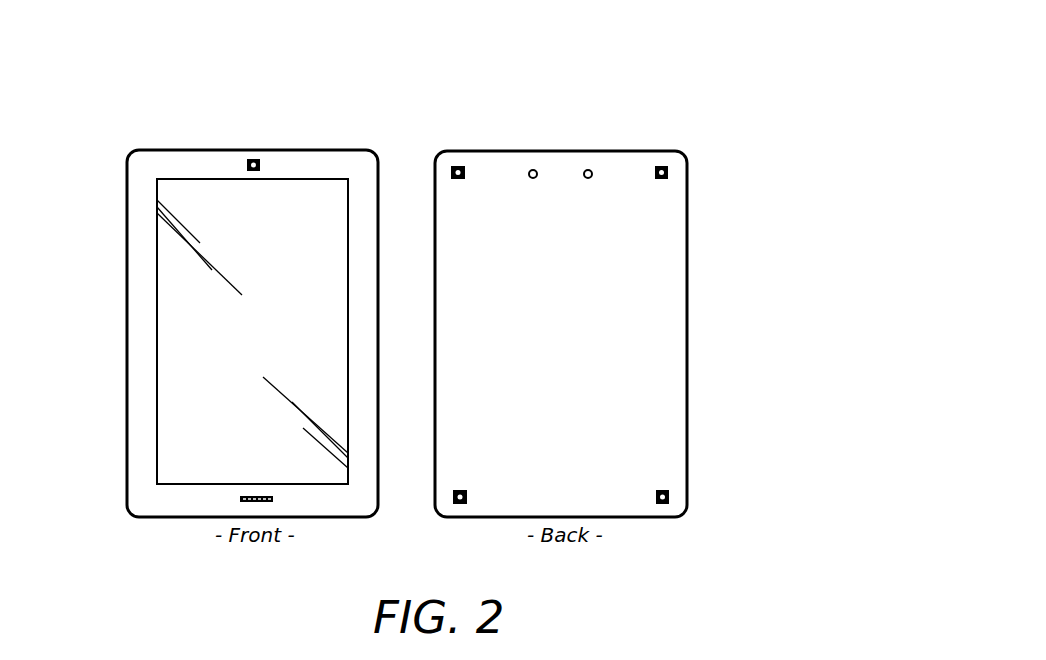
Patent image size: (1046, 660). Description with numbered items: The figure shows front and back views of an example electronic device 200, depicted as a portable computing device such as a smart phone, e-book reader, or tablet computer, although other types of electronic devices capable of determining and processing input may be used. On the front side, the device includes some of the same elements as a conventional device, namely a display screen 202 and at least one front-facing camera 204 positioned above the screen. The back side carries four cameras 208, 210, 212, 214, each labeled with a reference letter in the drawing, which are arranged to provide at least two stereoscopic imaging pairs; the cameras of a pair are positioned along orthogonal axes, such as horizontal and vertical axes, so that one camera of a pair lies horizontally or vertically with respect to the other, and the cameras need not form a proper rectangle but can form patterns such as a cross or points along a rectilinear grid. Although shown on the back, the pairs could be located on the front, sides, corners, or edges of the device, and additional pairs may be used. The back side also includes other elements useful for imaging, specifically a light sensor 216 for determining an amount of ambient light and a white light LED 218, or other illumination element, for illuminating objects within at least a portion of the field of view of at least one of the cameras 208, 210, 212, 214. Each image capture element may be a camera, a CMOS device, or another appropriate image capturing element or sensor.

The electronic device 200 is at (785, 106).
The display screen 202 is at (156, 188).
The front-facing camera 204 is at (249, 158).
The camera 208 is at (456, 165).
The camera 210 is at (668, 178).
The camera 212 is at (462, 503).
The camera 214 is at (670, 493).
The light sensor 216 is at (533, 169).
The white light LED 218 is at (588, 169).